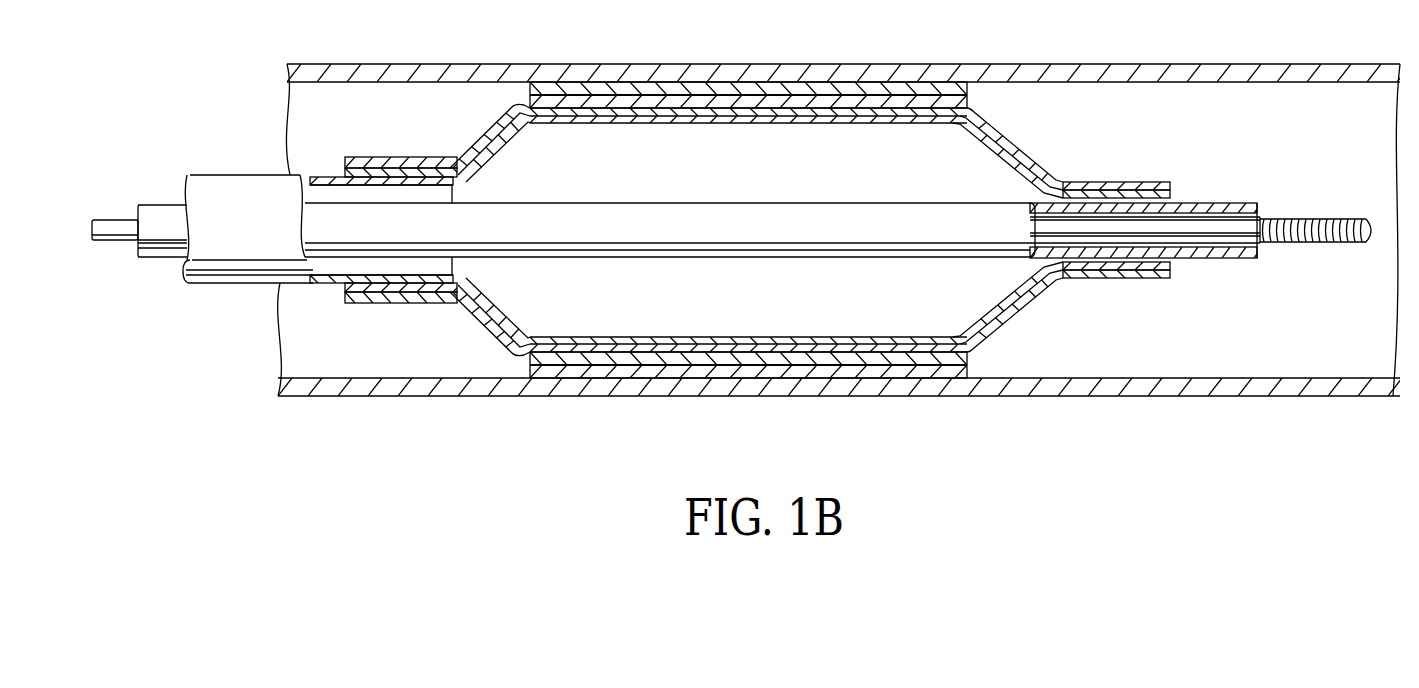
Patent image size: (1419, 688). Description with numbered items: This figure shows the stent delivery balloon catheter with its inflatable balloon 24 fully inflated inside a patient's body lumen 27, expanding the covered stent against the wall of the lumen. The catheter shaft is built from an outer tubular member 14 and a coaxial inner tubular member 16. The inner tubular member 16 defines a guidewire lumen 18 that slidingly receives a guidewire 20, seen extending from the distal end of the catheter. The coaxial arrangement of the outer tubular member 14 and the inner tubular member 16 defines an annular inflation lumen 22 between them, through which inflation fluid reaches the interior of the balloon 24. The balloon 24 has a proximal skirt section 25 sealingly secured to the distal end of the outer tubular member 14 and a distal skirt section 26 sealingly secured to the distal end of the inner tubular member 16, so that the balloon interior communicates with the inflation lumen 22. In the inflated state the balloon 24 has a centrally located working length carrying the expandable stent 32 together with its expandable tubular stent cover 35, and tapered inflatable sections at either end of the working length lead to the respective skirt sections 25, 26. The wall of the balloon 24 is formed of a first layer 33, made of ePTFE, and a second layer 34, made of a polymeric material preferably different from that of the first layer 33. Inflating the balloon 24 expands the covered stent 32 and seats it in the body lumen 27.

The outer tubular member 14 is at (217, 175).
The inner tubular member 16 is at (158, 205).
The guidewire lumen 18 is at (1258, 242).
The guidewire 20 is at (1297, 218).
The annular inflation lumen 22 is at (337, 263).
The inflatable balloon 24 is at (1030, 150).
The proximal skirt section 25 is at (363, 157).
The distal skirt section 26 is at (1128, 182).
The body lumen 27 is at (1227, 344).
The expandable stent 32 is at (687, 97).
The first layer 33 is at (477, 138).
The second layer 34 is at (497, 147).
The expandable tubular stent cover 35 is at (847, 83).